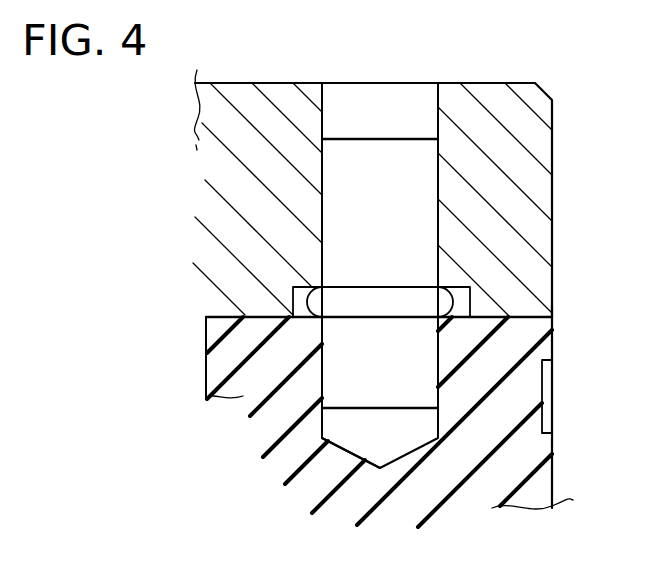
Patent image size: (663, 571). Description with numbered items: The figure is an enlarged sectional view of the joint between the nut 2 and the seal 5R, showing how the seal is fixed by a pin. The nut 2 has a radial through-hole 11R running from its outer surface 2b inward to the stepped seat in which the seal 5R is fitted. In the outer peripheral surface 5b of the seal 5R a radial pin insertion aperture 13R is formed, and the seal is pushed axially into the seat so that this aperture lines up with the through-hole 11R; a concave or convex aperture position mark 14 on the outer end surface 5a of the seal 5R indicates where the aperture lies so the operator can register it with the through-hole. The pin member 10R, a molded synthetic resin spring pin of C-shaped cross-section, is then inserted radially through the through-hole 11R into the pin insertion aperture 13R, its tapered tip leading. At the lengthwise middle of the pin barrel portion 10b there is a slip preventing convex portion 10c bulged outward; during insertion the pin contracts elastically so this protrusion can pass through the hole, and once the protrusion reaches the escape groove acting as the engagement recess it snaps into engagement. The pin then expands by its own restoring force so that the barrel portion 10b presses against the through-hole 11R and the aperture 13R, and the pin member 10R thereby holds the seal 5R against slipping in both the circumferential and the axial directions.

The nut 2 is at (520, 74).
The outer surface of the nut 2b is at (257, 83).
The radial through-hole 11R is at (372, 93).
The pin member 10R is at (343, 458).
The pin barrel portion 10b is at (400, 243).
The slip preventing convex portion 10c is at (207, 317).
The outer end surface of the seal 5a is at (553, 345).
The outer peripheral surface of the seal 5b is at (531, 316).
The seal 5R is at (542, 478).
The pin insertion aperture 13R is at (335, 440).
The aperture position mark 14 is at (553, 388).